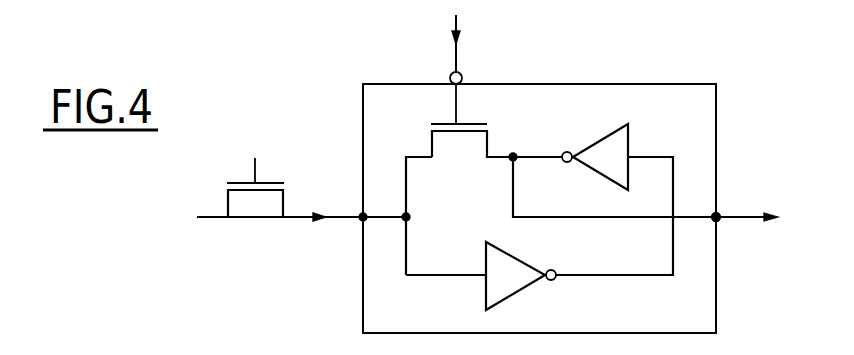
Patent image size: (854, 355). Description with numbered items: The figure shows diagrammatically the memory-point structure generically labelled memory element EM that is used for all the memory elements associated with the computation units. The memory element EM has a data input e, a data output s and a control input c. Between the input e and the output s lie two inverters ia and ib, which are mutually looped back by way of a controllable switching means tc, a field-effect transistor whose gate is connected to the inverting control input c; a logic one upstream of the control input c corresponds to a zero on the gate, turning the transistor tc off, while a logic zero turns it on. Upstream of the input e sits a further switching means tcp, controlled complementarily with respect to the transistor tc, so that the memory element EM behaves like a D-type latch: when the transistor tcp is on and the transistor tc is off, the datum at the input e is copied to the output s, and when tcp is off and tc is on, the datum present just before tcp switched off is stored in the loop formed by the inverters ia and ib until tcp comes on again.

The switching means tcp is at (268, 165).
The memory element EM is at (618, 61).
The data input e is at (362, 219).
The control input c is at (462, 74).
The controllable switching means tc is at (476, 115).
The inverter ia is at (597, 137).
The inverter ib is at (523, 288).
The data output s is at (718, 213).